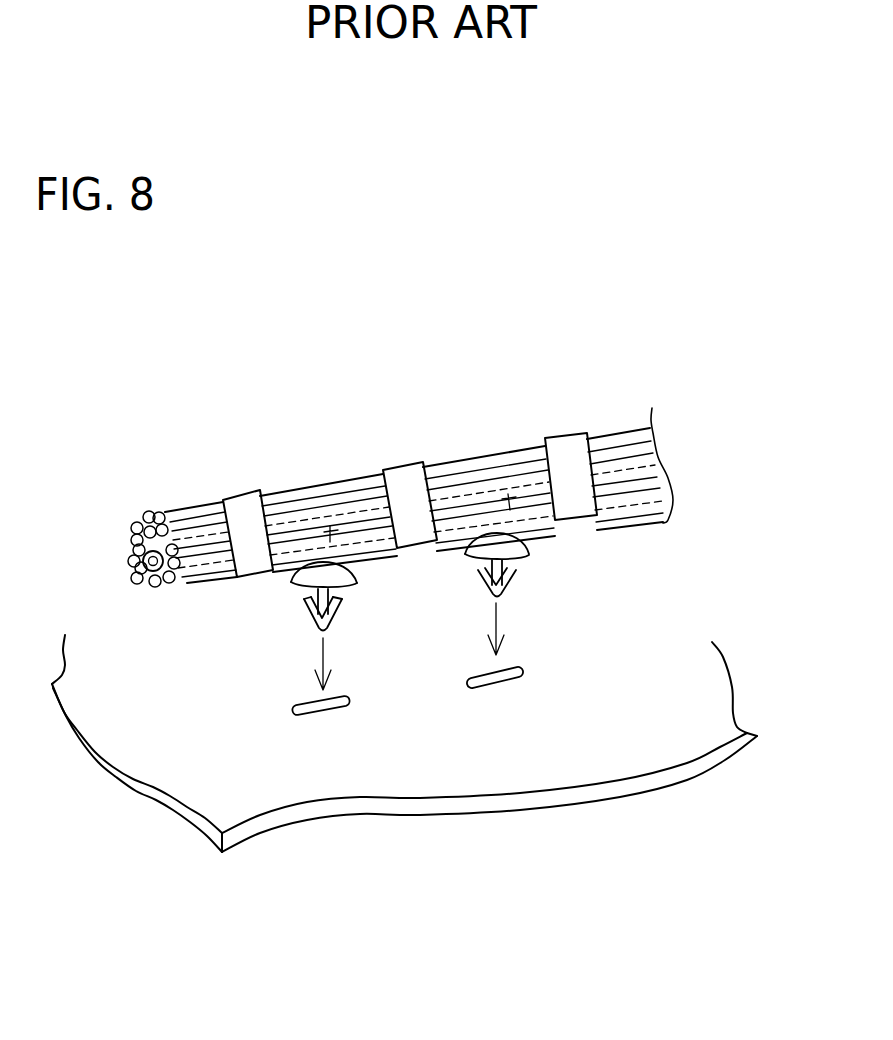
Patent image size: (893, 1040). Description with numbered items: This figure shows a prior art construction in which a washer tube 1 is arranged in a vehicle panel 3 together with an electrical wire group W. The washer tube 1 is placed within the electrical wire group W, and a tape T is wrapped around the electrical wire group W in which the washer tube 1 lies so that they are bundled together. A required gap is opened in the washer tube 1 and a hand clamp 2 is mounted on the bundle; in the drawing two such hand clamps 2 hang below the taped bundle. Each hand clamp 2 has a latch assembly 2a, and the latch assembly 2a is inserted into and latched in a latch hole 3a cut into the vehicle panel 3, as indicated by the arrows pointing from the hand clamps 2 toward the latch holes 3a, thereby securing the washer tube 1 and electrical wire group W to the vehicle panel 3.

The washer tube 1 is at (147, 516).
The electrical wire group W is at (629, 488).
The tape T is at (250, 503).
The hand clamp 2 is at (352, 618).
The latch assembly 2a is at (305, 598).
The vehicle panel 3 is at (303, 790).
The latch hole 3a is at (518, 676).